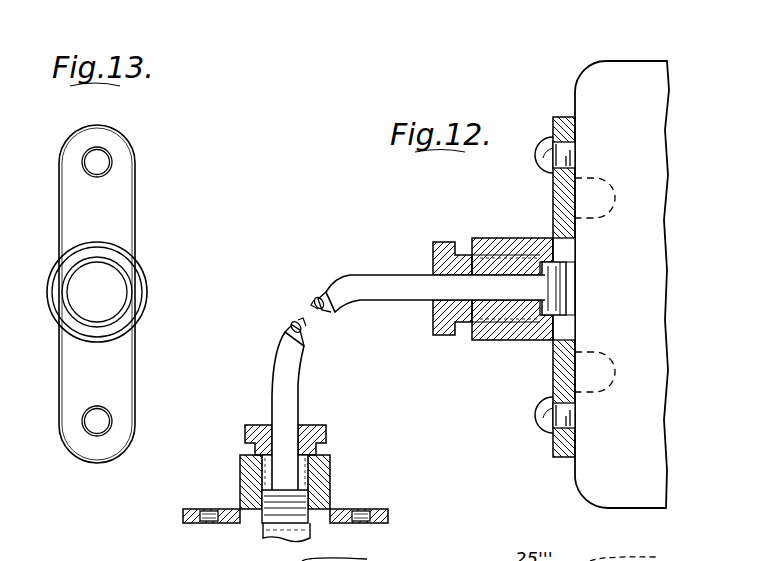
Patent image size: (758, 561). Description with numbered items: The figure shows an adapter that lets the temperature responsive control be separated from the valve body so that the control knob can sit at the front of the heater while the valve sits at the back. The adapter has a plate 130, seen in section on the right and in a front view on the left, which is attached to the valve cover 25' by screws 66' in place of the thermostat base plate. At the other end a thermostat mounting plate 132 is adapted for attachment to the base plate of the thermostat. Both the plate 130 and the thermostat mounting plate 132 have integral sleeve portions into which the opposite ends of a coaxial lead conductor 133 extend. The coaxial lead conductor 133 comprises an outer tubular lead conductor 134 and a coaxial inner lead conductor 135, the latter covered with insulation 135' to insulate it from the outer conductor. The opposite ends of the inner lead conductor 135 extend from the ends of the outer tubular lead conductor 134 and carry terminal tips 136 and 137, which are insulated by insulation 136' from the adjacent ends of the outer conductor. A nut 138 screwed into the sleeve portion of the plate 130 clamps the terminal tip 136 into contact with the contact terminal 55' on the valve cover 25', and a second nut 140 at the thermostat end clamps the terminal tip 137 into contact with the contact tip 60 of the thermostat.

In FIG. 12, the cover 25' is at (611, 260).
In FIG. 12, the contact terminal 55' is at (598, 293).
In FIG. 12, the contact tip 60 is at (265, 528).
In FIG. 12, the screws 66' is at (544, 115).
In FIG. 13, the plate 130 is at (118, 183).
In FIG. 12, the plate 130 is at (553, 185).
In FIG. 12, the thermostat mounting plate 132 is at (200, 512).
In FIG. 12, the coaxial lead conductor 133 is at (331, 279).
In FIG. 12, the outer tubular lead conductor 134 is at (400, 295).
In FIG. 12, the inner lead conductor 135 is at (350, 316).
In FIG. 12, the insulation 135' is at (284, 285).
In FIG. 12, the terminal tip 136 is at (590, 287).
In FIG. 12, the insulation 136' is at (551, 284).
In FIG. 12, the terminal tip 137 is at (308, 500).
In FIG. 12, the nut 138 is at (445, 248).
In FIG. 12, the second nut 140 is at (326, 430).